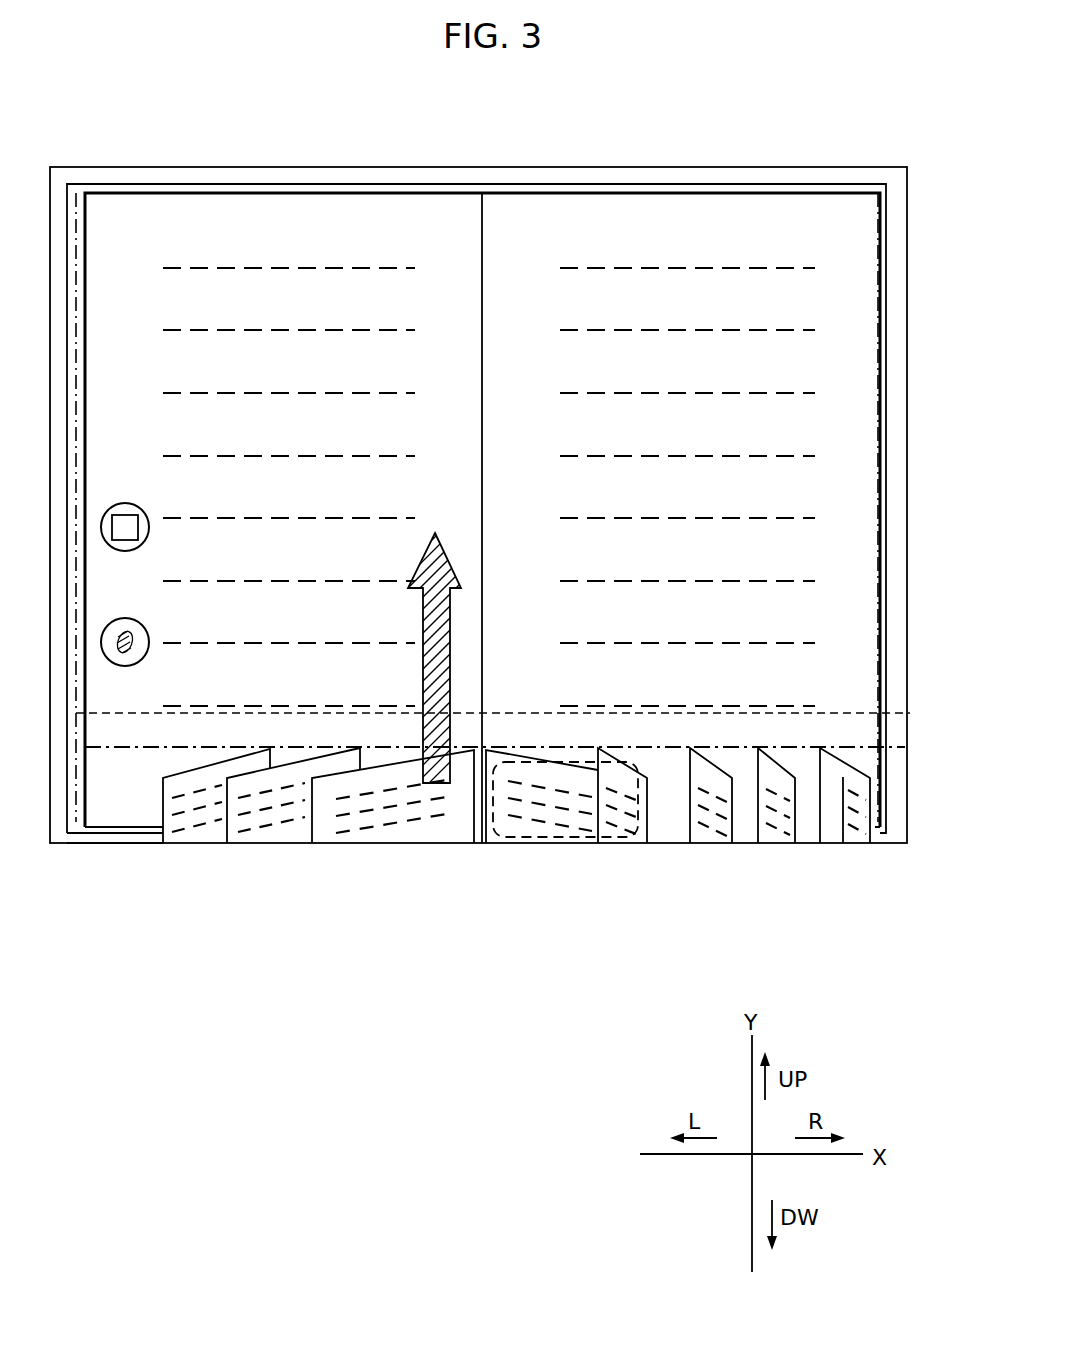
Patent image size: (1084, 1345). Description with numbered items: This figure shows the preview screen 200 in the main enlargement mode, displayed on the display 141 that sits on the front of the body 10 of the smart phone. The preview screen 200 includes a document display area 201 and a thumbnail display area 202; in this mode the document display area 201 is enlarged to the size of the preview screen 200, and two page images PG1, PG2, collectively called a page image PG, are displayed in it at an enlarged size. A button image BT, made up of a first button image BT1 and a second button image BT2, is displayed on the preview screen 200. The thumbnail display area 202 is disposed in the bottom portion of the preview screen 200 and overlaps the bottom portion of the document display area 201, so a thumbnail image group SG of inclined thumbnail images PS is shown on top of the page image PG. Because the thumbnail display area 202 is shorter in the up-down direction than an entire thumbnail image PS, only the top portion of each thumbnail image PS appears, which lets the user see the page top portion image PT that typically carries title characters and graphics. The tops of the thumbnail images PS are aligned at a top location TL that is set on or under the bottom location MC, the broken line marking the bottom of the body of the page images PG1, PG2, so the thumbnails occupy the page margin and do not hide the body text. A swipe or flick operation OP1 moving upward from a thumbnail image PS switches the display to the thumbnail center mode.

The preview screen 200 is at (210, 190).
The document display area 201 is at (758, 190).
The thumbnail display area 202 is at (152, 845).
The display 141 is at (96, 845).
The body 10 is at (128, 845).
The page image PG is at (489, 478).
The page image PG1 is at (335, 218).
The page image PG2 is at (596, 218).
The button image BT is at (169, 566).
The first button image BT1 is at (115, 504).
The second button image BT2 is at (144, 627).
The bottom location MC is at (510, 698).
The top location TL is at (514, 758).
The operation OP1 is at (451, 632).
The thumbnail image PS is at (912, 935).
The thumbnail image group SG is at (537, 869).
The page top portion image PT is at (637, 843).